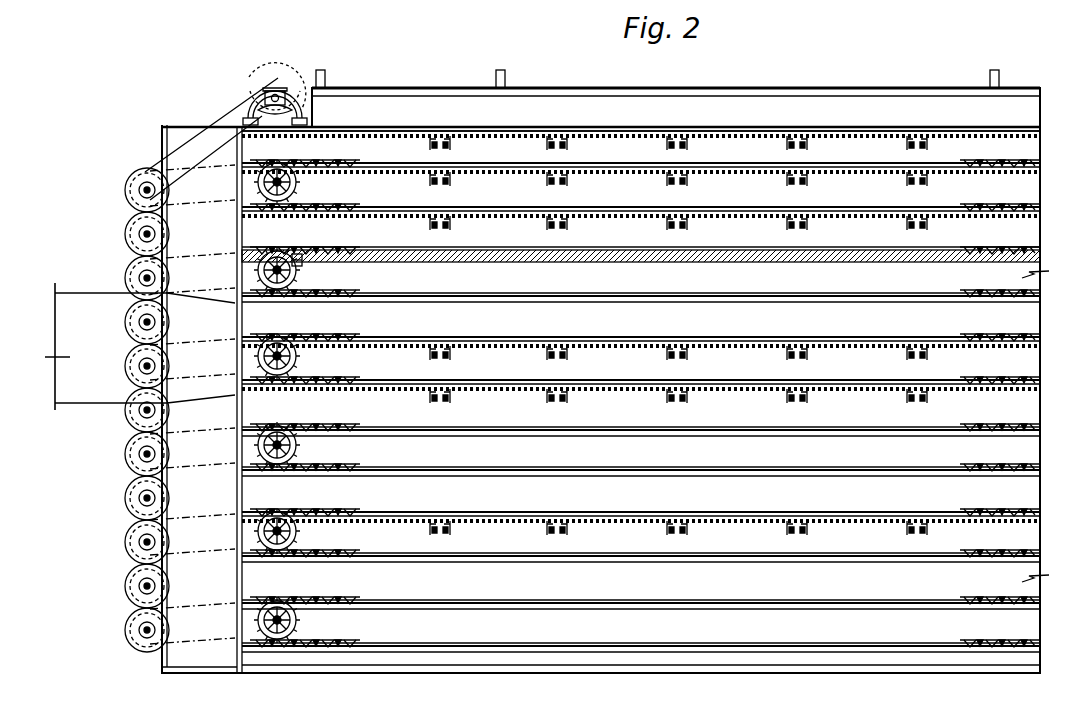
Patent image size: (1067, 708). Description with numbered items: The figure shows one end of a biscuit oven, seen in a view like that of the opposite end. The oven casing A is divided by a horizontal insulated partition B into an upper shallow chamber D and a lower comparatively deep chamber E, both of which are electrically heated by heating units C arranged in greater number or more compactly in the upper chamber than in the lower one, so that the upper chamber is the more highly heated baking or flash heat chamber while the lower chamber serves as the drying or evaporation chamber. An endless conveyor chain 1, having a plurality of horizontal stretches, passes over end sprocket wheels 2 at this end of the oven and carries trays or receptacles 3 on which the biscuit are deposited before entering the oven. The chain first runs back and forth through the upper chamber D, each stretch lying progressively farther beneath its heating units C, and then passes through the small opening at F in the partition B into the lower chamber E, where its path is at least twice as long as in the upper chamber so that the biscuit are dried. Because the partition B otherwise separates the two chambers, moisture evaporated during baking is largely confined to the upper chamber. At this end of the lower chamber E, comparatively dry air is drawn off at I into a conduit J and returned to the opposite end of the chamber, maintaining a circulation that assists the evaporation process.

The endless conveyor chain 1 is at (352, 299).
The end sprocket wheels 2 is at (260, 192).
The trays or receptacles 3 is at (975, 161).
The oven casing A is at (420, 89).
The horizontal partition B is at (652, 262).
The heating units C is at (840, 172).
The upper chamber D is at (601, 151).
The lower chamber E is at (641, 472).
The passage opening in partition F is at (302, 262).
The air outlet I is at (237, 323).
The conduit J is at (58, 405).